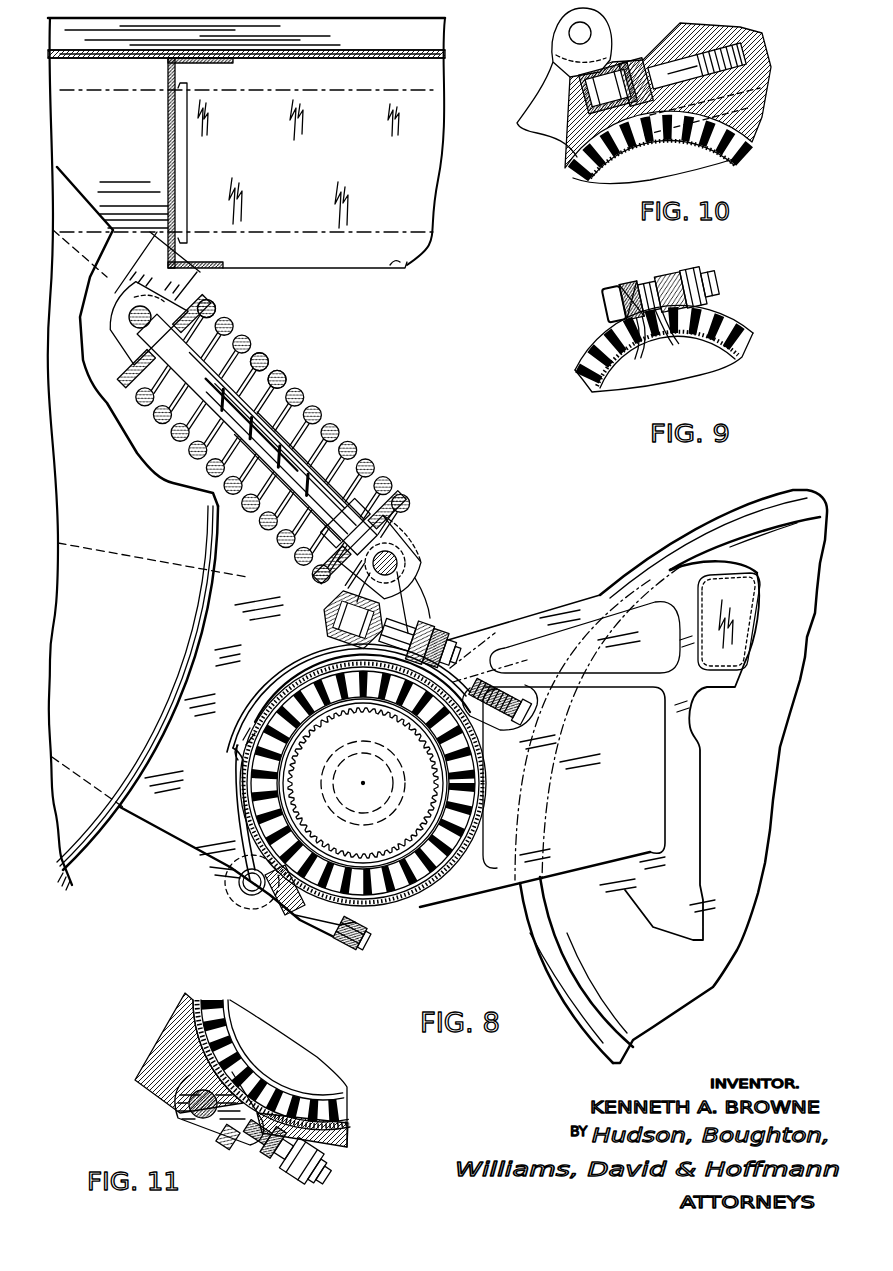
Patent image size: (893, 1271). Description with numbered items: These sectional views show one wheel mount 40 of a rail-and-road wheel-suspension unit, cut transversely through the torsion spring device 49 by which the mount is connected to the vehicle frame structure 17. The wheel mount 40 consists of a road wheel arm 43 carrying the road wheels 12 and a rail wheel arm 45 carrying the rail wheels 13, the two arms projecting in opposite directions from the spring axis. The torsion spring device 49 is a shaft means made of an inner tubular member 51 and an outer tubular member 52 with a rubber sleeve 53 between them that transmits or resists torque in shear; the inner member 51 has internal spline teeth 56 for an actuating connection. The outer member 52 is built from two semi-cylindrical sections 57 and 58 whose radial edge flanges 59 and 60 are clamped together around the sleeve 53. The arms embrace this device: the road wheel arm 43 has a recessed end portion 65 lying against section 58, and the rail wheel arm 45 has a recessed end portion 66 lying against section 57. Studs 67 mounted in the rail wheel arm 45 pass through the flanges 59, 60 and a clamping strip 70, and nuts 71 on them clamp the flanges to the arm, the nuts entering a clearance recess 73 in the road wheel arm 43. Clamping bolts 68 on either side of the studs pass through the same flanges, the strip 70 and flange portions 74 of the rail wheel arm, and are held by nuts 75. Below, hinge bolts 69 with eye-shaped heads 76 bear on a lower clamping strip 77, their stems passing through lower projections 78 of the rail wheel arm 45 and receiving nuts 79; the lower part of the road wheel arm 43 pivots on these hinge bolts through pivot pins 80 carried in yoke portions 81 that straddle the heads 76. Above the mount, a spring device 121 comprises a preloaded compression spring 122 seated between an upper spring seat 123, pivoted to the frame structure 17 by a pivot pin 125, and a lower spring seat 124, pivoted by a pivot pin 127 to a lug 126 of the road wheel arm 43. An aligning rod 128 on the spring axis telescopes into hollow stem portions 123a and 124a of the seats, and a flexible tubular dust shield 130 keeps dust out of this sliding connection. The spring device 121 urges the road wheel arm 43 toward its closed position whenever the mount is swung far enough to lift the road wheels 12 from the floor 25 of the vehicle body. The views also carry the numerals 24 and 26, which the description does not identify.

In FIG. 8, the road wheels 12 is at (77, 878).
In FIG. 8, the rail wheels 13 is at (600, 1028).
In FIG. 8, the frame structure 17 is at (390, 266).
In FIG. 8, the plate 24 is at (412, 165).
In FIG. 8, the floor 25 is at (322, 58).
In FIG. 8, the channel 26 is at (168, 118).
In FIG. 8, the wheel mount 40 is at (178, 866).
In FIG. 10, the wheel mount 40 is at (548, 140).
In FIG. 8, the road wheel arm 43 is at (150, 822).
In FIG. 8, the rail wheel arm 45 is at (580, 857).
In FIG. 11, the rail wheel arm 45 is at (347, 1145).
In FIG. 8, the torsion spring device 49 is at (255, 793).
In FIG. 8, the inner tubular member 51 is at (397, 857).
In FIG. 8, the outer tubular member 52 is at (408, 897).
In FIG. 8, the resilient sleeve 53 is at (440, 870).
In FIG. 8, the internal spline teeth 56 is at (323, 745).
In FIG. 8, the semi-cylindrical section 57 is at (510, 790).
In FIG. 8, the semi-cylindrical section 58 is at (285, 656).
In FIG. 8, the longitudinal edge flange 59 is at (460, 642).
In FIG. 9, the longitudinal edge flange 59 is at (646, 284).
In FIG. 11, the longitudinal edge flange 59 is at (247, 1142).
In FIG. 8, the longitudinal edge flange 60 is at (442, 634).
In FIG. 9, the longitudinal edge flange 60 is at (629, 290).
In FIG. 11, the longitudinal edge flange 60 is at (267, 1154).
In FIG. 8, the recessed end portion 65 is at (238, 752).
In FIG. 8, the recessed end portion 66 is at (505, 810).
In FIG. 8, the studs 67 is at (485, 660).
In FIG. 10, the studs 67 is at (672, 68).
In FIG. 8, the clamping bolts 68 is at (488, 668).
In FIG. 9, the clamping bolts 68 is at (668, 280).
In FIG. 8, the hinge bolts 69 is at (360, 946).
In FIG. 11, the hinge bolts 69 is at (328, 1178).
In FIG. 8, the clamping strip 70 is at (425, 628).
In FIG. 10, the clamping strip 70 is at (630, 62).
In FIG. 9, the clamping strip 70 is at (613, 300).
In FIG. 8, the nuts 71 is at (403, 617).
In FIG. 8, the clearance recess 73 is at (344, 616).
In FIG. 10, the clearance recess 73 is at (582, 92).
In FIG. 9, the flange portions 74 is at (692, 282).
In FIG. 9, the nuts 75 is at (718, 282).
In FIG. 8, the eye-shaped heads 76 is at (275, 920).
In FIG. 11, the eye-shaped heads 76 is at (190, 1127).
In FIG. 11, the lower clamping strip 77 is at (220, 1148).
In FIG. 11, the lower projections 78 is at (295, 1171).
In FIG. 11, the nuts 79 is at (310, 1182).
In FIG. 8, the pivot pins 80 is at (250, 896).
In FIG. 11, the pivot pins 80 is at (185, 1108).
In FIG. 8, the yoke portions 81 is at (233, 893).
In FIG. 8, the spring device 121 is at (250, 344).
In FIG. 8, the compression spring 122 is at (272, 362).
In FIG. 8, the upper spring seat 123 is at (190, 300).
In FIG. 8, the hollow stem portion 123a is at (212, 312).
In FIG. 8, the lower spring seat 124 is at (398, 503).
In FIG. 8, the hollow stem portion 124a is at (345, 470).
In FIG. 8, the pivot pin 125 is at (130, 325).
In FIG. 8, the lug 126 is at (405, 560).
In FIG. 8, the pivot pin 127 is at (397, 545).
In FIG. 10, the pivot pin 127 is at (568, 34).
In FIG. 8, the aligning rod 128 is at (310, 430).
In FIG. 8, the dust shield 130 is at (300, 400).